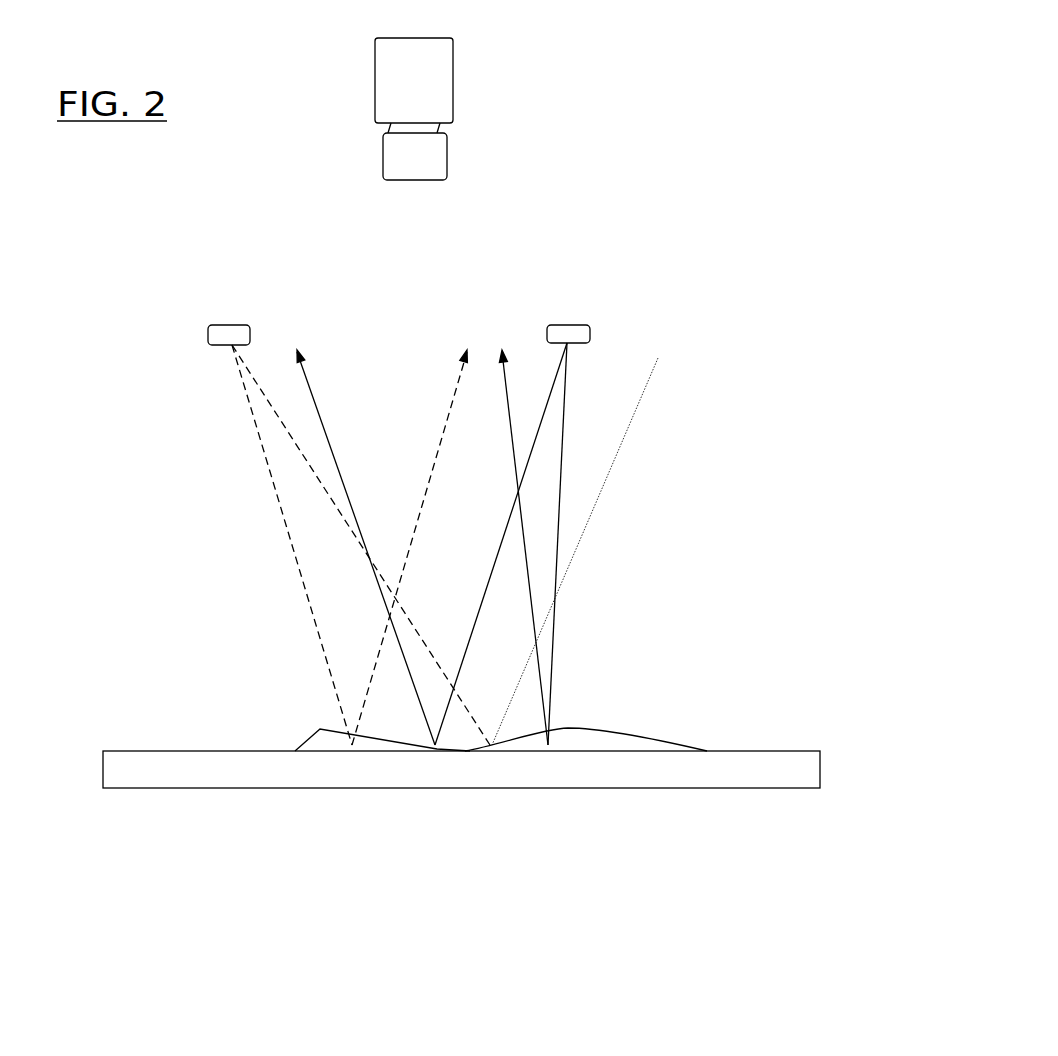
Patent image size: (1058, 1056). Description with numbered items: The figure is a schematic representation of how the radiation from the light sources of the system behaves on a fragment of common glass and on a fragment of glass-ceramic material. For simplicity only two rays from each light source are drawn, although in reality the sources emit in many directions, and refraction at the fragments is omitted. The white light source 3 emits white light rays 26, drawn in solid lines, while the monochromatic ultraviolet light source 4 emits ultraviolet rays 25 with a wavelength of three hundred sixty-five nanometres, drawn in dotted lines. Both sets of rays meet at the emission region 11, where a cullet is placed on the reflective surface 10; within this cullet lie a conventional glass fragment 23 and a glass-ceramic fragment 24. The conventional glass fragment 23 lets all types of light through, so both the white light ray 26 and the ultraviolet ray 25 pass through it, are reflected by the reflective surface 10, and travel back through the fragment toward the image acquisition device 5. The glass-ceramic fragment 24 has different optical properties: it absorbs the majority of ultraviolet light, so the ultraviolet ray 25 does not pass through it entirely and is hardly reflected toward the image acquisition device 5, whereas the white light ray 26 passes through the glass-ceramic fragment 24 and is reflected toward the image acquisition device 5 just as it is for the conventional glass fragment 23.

The image acquisition device 5 is at (453, 85).
The monochromatic ultraviolet light source 4 is at (208, 335).
The white light source 3 is at (590, 333).
The ultraviolet rays 25 is at (255, 425).
The white light rays 26 is at (562, 470).
The emission region 11 is at (572, 667).
The reflective surface 10 is at (192, 788).
The conventional glass fragment 23 is at (300, 742).
The glass-ceramic fragment 24 is at (650, 739).